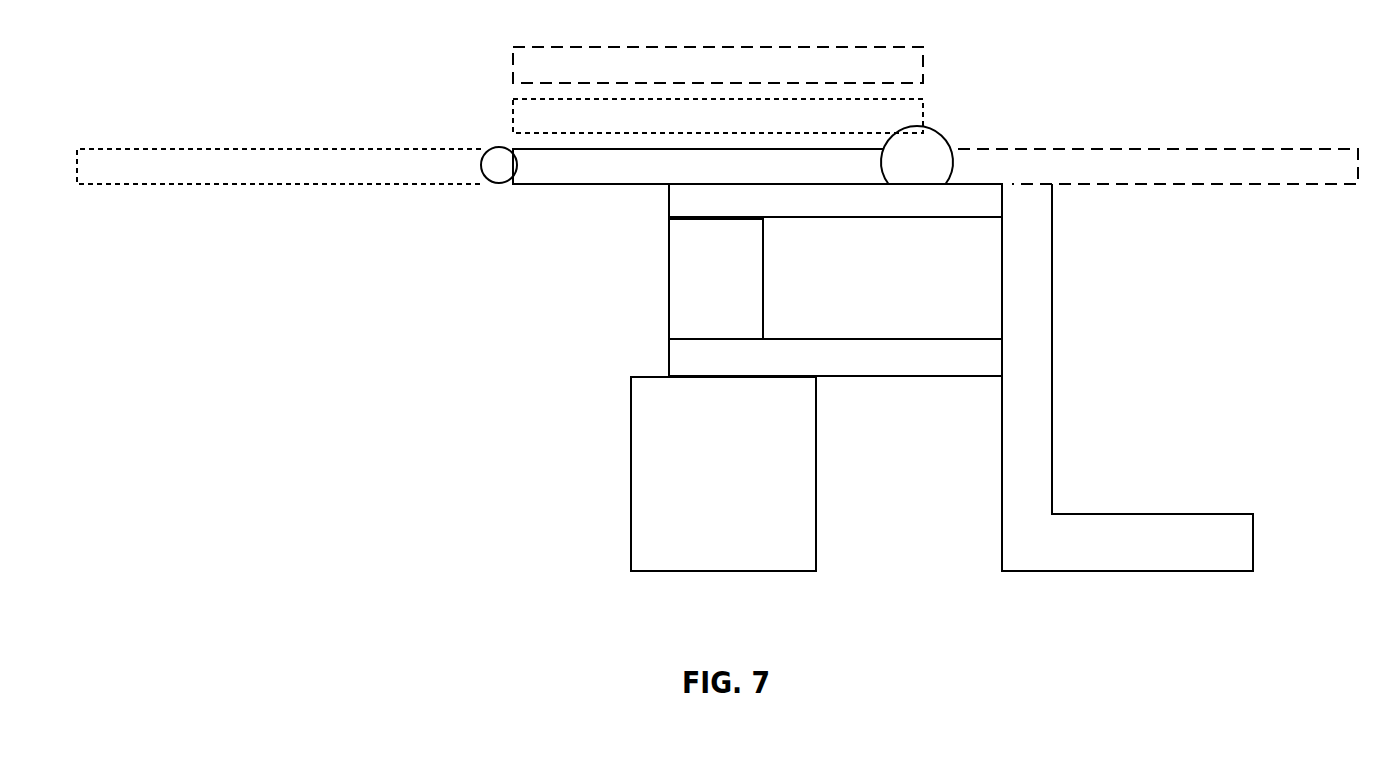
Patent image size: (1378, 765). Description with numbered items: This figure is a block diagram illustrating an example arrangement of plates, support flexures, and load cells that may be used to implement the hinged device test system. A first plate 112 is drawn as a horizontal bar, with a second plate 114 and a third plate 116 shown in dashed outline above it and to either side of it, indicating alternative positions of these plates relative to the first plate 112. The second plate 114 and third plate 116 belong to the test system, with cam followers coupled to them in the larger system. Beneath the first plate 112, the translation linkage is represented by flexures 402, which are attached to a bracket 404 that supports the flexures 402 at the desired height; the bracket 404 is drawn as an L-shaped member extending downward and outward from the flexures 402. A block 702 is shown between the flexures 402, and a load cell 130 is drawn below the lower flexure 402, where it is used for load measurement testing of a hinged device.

The first plate 112 is at (697, 178).
The second plate 114 is at (697, 128).
The third plate 116 is at (697, 77).
The load cell 130 is at (702, 486).
The flexure 402 is at (814, 212).
The bracket 404 is at (1043, 296).
The module 702 is at (694, 292).